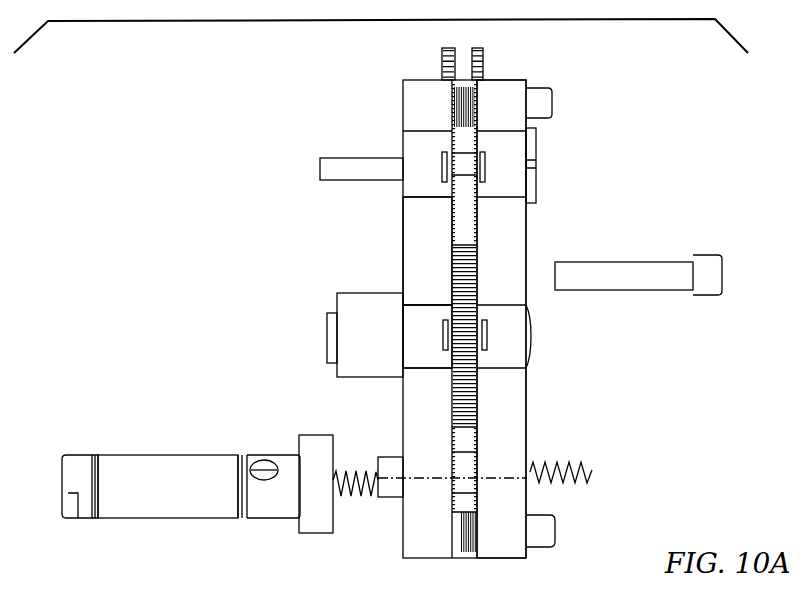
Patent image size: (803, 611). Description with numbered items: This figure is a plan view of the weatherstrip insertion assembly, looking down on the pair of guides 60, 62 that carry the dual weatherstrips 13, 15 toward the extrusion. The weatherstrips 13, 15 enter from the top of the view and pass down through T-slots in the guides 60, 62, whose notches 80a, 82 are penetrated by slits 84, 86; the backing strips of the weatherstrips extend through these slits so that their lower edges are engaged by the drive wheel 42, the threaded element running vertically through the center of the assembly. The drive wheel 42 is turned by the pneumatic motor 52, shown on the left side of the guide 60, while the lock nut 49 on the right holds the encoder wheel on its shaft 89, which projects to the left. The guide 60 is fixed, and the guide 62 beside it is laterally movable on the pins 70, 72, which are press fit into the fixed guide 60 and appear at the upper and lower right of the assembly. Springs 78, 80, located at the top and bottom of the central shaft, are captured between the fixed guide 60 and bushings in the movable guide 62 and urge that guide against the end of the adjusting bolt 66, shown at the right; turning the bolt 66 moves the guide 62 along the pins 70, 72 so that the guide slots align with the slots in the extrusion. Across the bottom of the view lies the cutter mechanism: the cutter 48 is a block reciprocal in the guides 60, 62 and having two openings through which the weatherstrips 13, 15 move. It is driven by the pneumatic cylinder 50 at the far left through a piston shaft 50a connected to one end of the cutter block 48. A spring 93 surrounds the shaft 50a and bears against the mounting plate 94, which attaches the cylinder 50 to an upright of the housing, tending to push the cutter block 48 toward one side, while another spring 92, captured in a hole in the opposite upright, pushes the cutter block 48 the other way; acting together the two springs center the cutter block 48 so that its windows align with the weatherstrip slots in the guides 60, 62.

The weatherstrip 13 is at (483, 63).
The weatherstrip 15 is at (443, 58).
The drive wheel 42 is at (478, 410).
The cutter 48 is at (392, 457).
The lock nut 49 is at (537, 152).
The pneumatic cylinder 50 is at (180, 465).
The piston shaft 50a is at (375, 497).
The pneumatic motor 52 is at (357, 297).
The guide 60 is at (403, 245).
The guide 62 is at (518, 233).
The adjusting bolt 66 is at (720, 255).
The pin 70 is at (543, 530).
The pin 72 is at (533, 82).
The spring 78 is at (457, 113).
The spring 80 is at (468, 558).
The notch 80a is at (425, 305).
The notch 82 is at (436, 197).
The slit 84 is at (443, 335).
The slit 86 is at (487, 153).
The shaft 89 is at (357, 158).
The spring 92 is at (593, 470).
The spring 93 is at (352, 470).
The mounting plate 94 is at (305, 440).